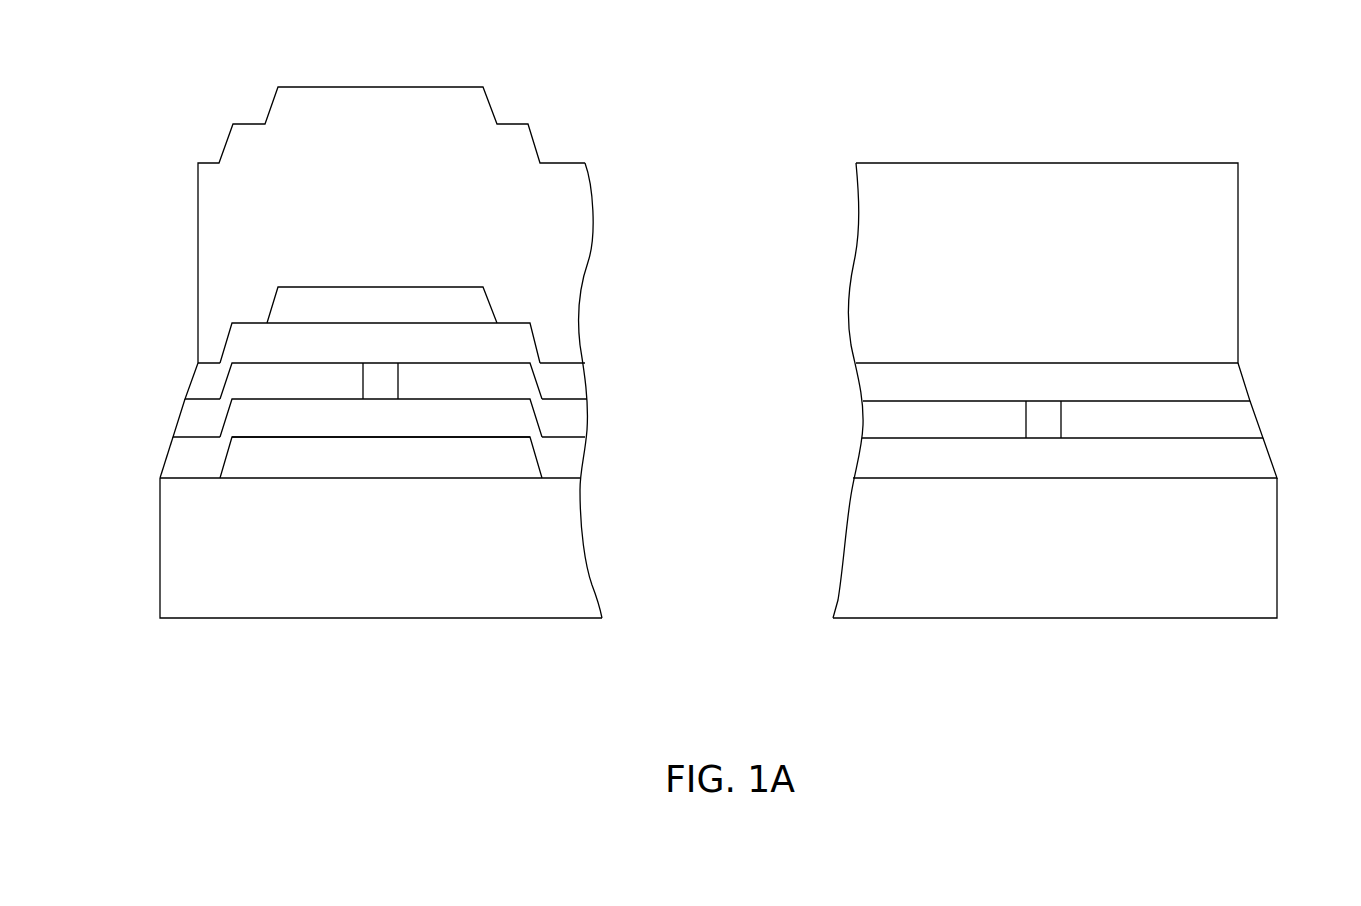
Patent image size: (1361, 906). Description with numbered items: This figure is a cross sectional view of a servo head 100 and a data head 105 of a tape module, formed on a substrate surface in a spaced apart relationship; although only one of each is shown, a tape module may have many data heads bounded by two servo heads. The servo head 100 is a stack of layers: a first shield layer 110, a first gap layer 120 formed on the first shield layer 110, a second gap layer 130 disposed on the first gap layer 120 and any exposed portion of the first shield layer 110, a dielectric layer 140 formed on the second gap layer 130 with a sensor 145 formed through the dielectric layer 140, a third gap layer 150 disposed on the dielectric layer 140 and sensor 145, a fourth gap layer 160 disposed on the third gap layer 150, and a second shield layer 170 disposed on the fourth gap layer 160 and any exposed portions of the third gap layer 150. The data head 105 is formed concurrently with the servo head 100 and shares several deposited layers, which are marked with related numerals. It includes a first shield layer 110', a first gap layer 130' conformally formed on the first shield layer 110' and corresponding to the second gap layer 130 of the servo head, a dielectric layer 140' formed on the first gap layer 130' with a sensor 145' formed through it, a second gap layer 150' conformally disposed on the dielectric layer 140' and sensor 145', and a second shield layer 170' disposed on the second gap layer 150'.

The servo head 100 is at (537, 85).
The data head 105 is at (912, 100).
The first shield layer 110 is at (415, 548).
The first gap layer 120 is at (388, 469).
The second gap layer 130 is at (415, 457).
The dielectric layer 140 is at (421, 418).
The sensor 145 is at (316, 376).
The third gap layer 150 is at (427, 361).
The fourth gap layer 160 is at (475, 302).
The second shield layer 170 is at (434, 225).
The first shield layer 110' is at (1018, 548).
The first gap layer 130' is at (1026, 459).
The dielectric layer 140' is at (1017, 419).
The sensor 145' is at (1180, 400).
The second gap layer 150' is at (1014, 382).
The second shield layer 170' is at (1005, 263).